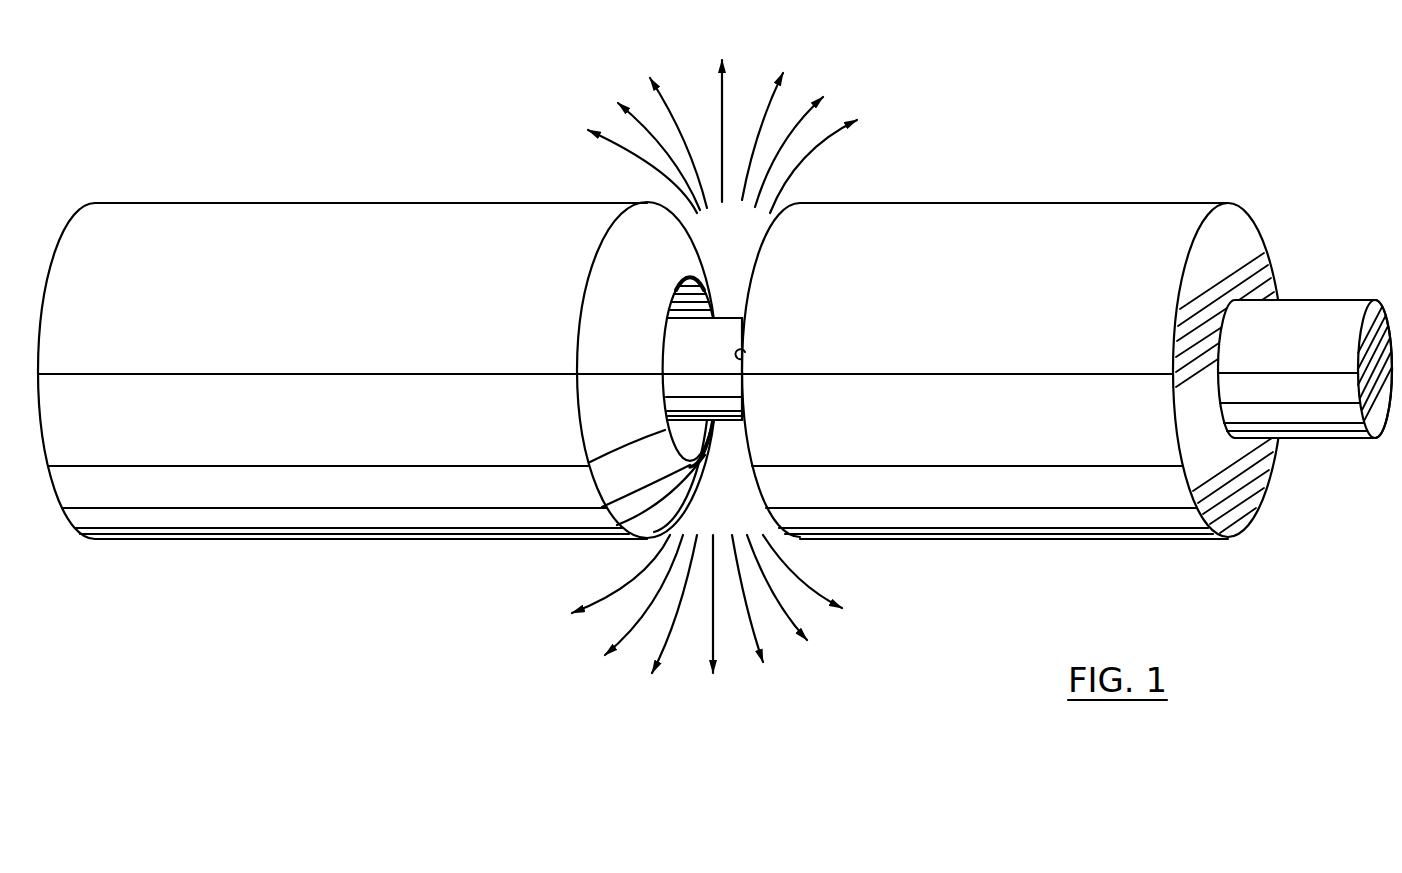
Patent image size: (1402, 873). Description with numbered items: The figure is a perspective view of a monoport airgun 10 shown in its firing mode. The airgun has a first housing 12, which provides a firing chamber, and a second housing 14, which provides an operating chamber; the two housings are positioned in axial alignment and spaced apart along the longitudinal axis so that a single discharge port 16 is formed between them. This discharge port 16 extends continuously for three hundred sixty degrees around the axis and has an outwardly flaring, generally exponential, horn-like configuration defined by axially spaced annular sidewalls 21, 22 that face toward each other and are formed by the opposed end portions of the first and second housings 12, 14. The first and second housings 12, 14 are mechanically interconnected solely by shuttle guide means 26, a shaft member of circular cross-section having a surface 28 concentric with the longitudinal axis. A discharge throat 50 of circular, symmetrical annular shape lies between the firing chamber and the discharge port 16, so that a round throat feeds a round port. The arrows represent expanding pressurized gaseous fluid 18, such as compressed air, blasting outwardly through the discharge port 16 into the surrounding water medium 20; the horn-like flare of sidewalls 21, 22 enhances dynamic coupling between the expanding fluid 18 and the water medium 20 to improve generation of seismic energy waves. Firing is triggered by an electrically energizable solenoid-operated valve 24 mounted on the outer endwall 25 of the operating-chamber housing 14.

The monoport airgun 10 is at (715, 367).
The first housing 12 is at (377, 342).
The second housing 14 is at (1067, 336).
The discharge port 16 is at (714, 259).
The expanding pressurized gaseous fluid 18 is at (748, 148).
The surrounding water medium 20 is at (708, 26).
The annular sidewall 21 is at (612, 318).
The annular sidewall 22 is at (745, 352).
The solenoid-operated valve 24 is at (1322, 298).
The outer endwall 25 is at (1247, 235).
The shuttle guide means 26 is at (430, 369).
The surface 28 is at (675, 386).
The discharge throat 50 is at (688, 303).